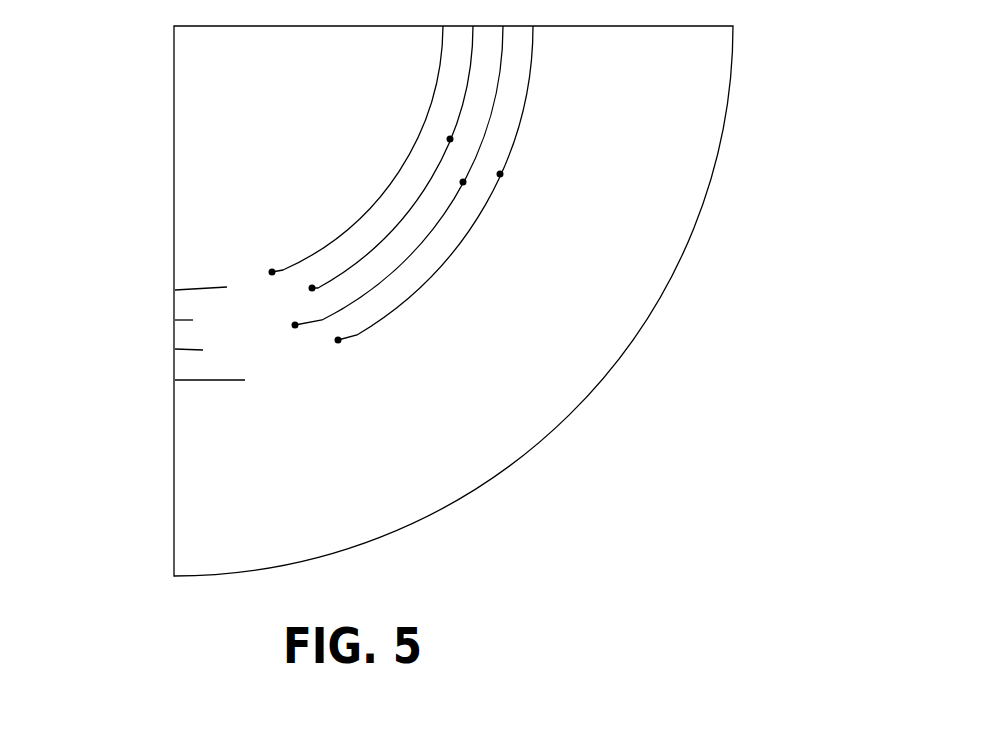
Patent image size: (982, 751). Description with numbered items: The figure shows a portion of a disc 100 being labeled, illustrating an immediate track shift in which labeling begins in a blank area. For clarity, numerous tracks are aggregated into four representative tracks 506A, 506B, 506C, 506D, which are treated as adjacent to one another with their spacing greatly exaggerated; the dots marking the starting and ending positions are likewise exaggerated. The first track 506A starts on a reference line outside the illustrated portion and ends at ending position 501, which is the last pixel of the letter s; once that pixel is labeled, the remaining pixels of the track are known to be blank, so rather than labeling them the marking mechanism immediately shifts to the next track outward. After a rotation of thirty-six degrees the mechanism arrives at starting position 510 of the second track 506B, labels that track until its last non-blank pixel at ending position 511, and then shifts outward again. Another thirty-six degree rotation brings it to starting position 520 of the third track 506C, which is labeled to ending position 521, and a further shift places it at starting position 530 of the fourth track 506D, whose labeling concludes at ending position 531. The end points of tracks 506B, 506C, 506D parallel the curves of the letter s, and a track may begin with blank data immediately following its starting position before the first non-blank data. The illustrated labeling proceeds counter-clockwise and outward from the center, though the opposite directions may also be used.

The disc 100 is at (707, 243).
The ending position 501 is at (272, 272).
The first track 506A is at (175, 290).
The second track 506B is at (175, 320).
The third track 506C is at (175, 349).
The fourth track 506D is at (175, 380).
The starting position 510 is at (450, 139).
The ending position 511 is at (312, 288).
The starting position 520 is at (463, 182).
The ending position 521 is at (295, 325).
The starting position 530 is at (500, 174).
The ending position 531 is at (338, 340).